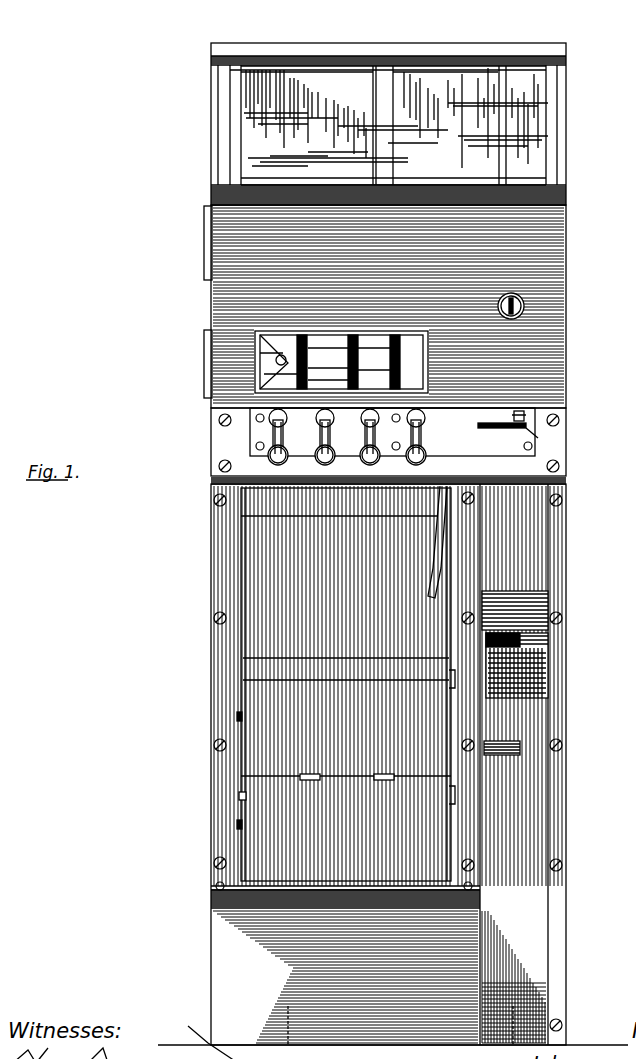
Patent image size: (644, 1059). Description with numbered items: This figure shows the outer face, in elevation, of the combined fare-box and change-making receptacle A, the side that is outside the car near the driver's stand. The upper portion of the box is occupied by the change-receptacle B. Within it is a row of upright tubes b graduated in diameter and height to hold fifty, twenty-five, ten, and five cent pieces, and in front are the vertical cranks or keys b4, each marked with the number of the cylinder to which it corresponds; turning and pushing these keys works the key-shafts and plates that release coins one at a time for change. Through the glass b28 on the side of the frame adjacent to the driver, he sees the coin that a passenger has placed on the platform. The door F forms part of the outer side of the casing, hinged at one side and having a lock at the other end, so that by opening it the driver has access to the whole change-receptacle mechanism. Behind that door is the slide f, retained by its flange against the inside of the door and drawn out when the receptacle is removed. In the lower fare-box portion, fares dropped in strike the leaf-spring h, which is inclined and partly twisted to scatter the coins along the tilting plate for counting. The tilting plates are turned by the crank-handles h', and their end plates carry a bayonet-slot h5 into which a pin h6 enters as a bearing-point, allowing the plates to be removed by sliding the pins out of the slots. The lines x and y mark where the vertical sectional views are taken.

The section line x x is at (268, 40).
The section line y y is at (515, 40).
The change-receptacle B is at (411, 263).
The combined fare-box and change-making receptacle A is at (370, 764).
The door F is at (385, 306).
The slide f is at (558, 192).
The glass b28 is at (396, 118).
The upright tubes b is at (341, 362).
The vertical cranks or keys b4 is at (354, 437).
The leaf-spring h is at (424, 542).
The bayonet-slot h5 is at (232, 818).
The pin h6 is at (233, 790).
The crank-handles h' is at (514, 764).